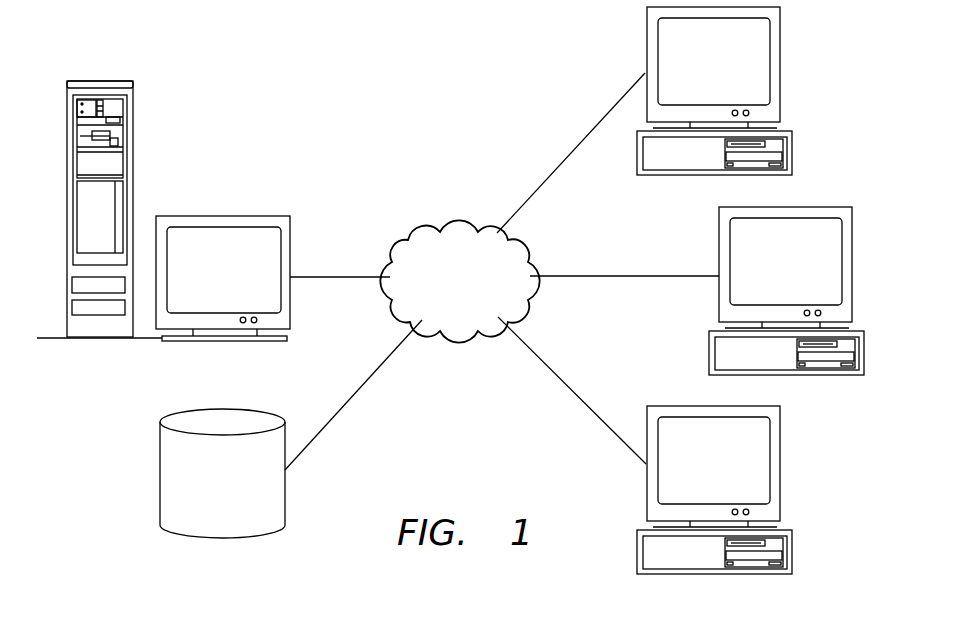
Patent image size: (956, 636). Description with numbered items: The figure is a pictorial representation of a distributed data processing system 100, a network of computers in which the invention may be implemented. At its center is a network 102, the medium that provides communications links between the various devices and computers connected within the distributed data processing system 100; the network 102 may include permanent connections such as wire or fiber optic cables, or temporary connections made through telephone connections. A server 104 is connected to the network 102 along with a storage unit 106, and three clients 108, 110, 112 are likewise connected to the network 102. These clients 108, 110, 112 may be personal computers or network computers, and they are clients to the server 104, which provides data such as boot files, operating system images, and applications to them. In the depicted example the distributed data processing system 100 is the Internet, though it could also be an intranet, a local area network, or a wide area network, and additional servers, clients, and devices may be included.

The distributed data processing system 100 is at (357, 52).
The network 102 is at (439, 311).
The server 104 is at (205, 279).
The storage unit 106 is at (205, 496).
The client 108 is at (697, 77).
The client 110 is at (769, 277).
The client 112 is at (697, 476).